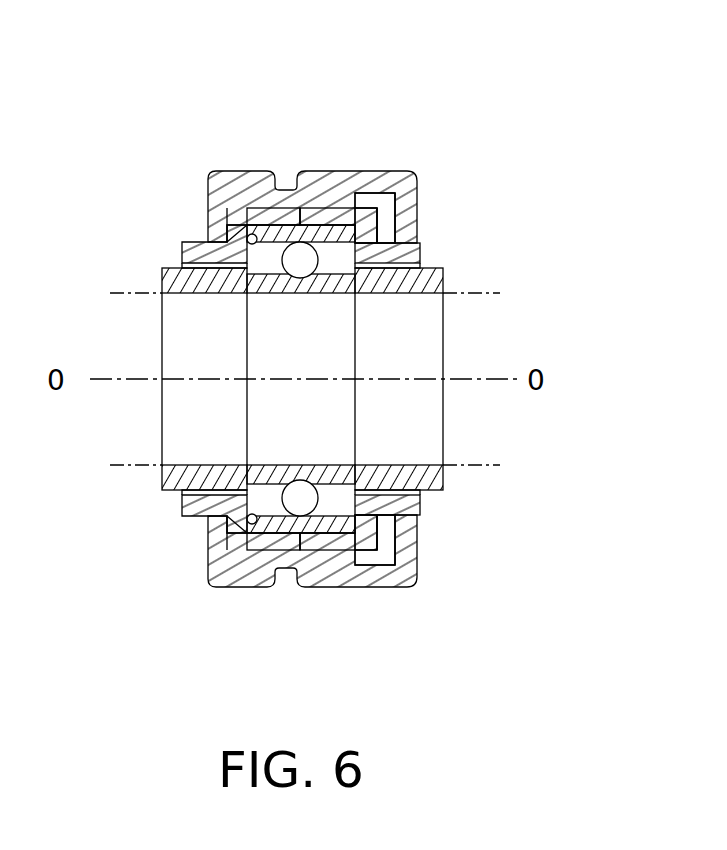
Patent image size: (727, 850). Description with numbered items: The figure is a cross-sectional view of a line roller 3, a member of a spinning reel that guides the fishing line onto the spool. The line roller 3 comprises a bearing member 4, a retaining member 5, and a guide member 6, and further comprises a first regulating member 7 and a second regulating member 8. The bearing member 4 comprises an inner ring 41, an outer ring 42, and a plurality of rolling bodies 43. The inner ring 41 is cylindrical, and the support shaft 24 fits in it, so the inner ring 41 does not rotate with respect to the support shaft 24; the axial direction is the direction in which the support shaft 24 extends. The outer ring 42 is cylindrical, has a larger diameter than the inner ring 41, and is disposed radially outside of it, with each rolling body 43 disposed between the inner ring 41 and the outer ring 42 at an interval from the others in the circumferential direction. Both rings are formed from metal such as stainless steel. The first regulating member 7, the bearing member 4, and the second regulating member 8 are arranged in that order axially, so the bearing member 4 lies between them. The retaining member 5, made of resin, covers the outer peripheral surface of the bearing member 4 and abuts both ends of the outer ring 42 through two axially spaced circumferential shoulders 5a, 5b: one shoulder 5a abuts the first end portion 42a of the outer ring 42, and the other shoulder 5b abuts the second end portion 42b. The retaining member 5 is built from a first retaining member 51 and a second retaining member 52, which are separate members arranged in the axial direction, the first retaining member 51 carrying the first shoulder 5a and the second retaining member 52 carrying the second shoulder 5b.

The line roller 3 is at (446, 80).
The bearing member 4 is at (421, 251).
The retaining member 5 is at (394, 226).
The first shoulder 5a is at (208, 243).
The second shoulder 5b is at (360, 256).
The guide member 6 is at (427, 162).
The first regulating member 7 is at (160, 281).
The second regulating member 8 is at (447, 284).
The support shaft 24 is at (136, 447).
The inner ring 41 is at (262, 295).
The outer ring 42 is at (308, 222).
The first end portion 42a is at (231, 170).
The second end portion 42b is at (372, 215).
The rolling body 43 is at (301, 262).
The first retaining member 51 is at (248, 207).
The second retaining member 52 is at (326, 210).